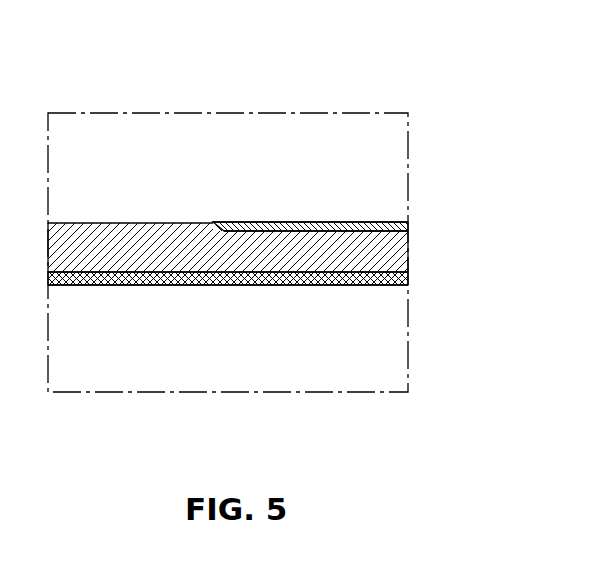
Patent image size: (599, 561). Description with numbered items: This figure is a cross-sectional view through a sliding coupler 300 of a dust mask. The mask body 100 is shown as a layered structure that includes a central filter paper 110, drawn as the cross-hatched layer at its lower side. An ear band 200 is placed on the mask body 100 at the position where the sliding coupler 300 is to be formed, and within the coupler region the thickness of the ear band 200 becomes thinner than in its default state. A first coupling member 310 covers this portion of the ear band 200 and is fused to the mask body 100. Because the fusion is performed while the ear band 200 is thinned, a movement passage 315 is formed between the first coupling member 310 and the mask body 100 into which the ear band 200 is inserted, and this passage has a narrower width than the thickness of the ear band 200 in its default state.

The mask body 100 is at (296, 285).
The central filter paper 110 is at (340, 285).
The ear band 200 is at (136, 222).
The sliding coupler 300 is at (288, 221).
The first coupling member 310 is at (345, 222).
The movement passage 315 is at (360, 236).